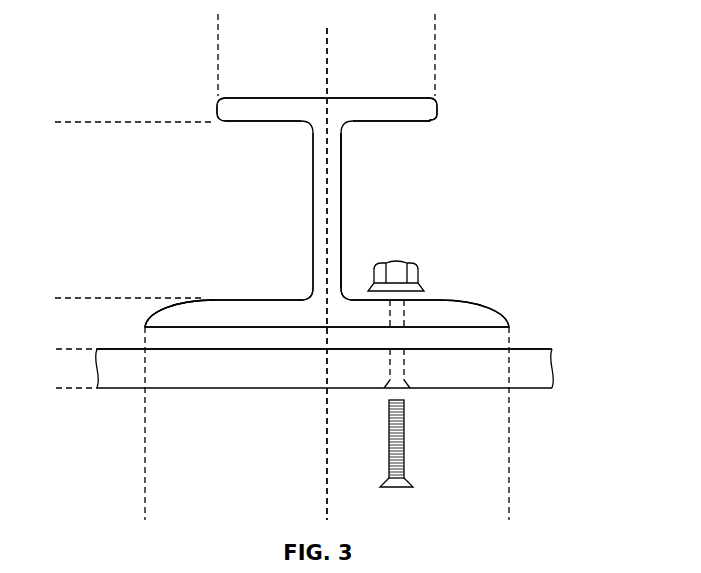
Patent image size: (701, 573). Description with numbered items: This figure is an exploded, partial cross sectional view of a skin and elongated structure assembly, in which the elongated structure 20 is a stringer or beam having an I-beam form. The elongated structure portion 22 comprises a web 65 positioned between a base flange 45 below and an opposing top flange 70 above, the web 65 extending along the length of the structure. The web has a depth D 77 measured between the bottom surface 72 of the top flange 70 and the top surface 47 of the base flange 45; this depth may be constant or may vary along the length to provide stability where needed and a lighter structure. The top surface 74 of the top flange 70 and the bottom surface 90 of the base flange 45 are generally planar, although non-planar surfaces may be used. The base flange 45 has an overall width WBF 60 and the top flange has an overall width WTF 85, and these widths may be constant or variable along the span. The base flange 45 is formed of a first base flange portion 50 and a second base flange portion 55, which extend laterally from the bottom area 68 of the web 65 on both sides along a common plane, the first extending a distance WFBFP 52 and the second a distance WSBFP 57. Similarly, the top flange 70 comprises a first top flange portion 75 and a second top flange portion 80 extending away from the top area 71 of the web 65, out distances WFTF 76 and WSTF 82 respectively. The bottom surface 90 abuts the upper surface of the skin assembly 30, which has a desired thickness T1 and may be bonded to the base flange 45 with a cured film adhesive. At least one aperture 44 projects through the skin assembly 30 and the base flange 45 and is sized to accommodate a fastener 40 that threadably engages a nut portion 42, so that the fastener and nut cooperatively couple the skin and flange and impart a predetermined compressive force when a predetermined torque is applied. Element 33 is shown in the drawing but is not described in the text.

The elongated structure 20 is at (522, 86).
The elongated structure portion 22 is at (396, 188).
The skin assembly 30 is at (588, 78).
The top surface of plate 33 is at (516, 348).
The fastener 40 is at (418, 273).
The nut portion 42 is at (405, 446).
The aperture 44 is at (406, 319).
The base flange 45 is at (165, 279).
The top surface of the bottom flange 47 is at (282, 298).
The first base flange portion 50 is at (237, 313).
The lateral distance WFBFP 52 is at (145, 513).
The second base flange portion 55 is at (482, 311).
The lateral distance WSBFP 57 is at (327, 513).
The overall width WBF of the base flange 60 is at (509, 492).
The web 65 is at (327, 217).
The bottom area of the web 68 is at (349, 296).
The top flange 70 is at (443, 86).
The top area of the web 71 is at (350, 125).
The bottom surface of the top flange 72 is at (258, 122).
The top surface of the top flange 74 is at (355, 98).
The first top flange portion 75 is at (217, 112).
The lateral distance WFTF 76 is at (218, 50).
The web depth D 77 is at (61, 122).
The second top flange portion 80 is at (433, 122).
The lateral distance WSTF 82 is at (327, 50).
The overall width WTF of the top flange 85 is at (435, 18).
The bottom surface of the base flange 90 is at (477, 328).
The thickness of the skin assembly T1 is at (62, 349).